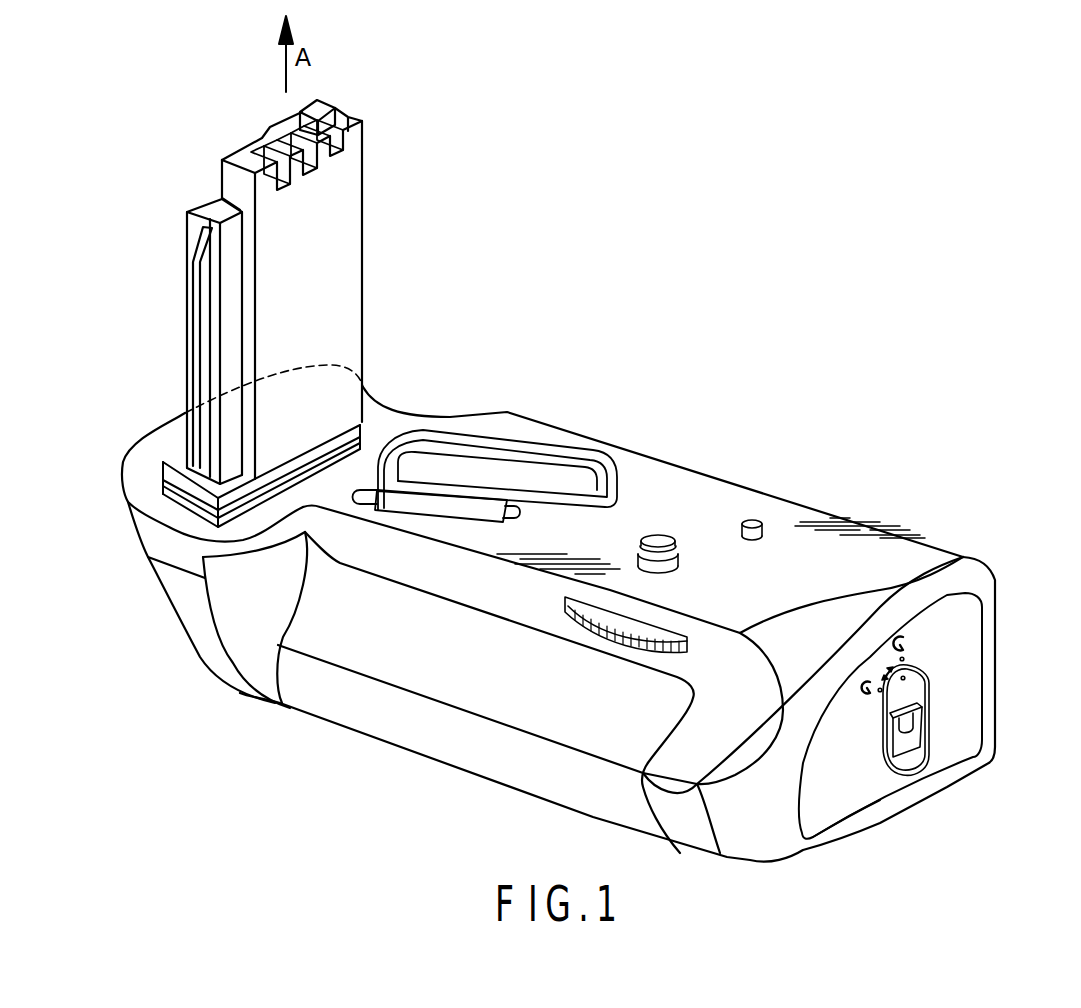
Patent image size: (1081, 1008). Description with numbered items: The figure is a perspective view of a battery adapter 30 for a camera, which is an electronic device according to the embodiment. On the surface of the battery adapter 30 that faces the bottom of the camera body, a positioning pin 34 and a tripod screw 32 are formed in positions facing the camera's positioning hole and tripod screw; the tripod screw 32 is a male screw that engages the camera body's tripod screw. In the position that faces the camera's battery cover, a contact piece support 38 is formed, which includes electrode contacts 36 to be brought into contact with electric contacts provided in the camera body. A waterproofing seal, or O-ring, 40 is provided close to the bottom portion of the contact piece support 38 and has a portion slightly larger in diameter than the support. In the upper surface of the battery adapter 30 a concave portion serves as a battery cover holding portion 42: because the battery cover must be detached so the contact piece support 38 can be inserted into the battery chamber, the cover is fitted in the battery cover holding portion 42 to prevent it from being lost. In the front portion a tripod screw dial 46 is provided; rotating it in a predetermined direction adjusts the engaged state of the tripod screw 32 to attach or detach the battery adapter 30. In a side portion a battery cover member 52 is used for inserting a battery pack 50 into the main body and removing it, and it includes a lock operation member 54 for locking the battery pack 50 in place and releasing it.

The battery adapter 30 is at (373, 750).
The tripod screw 32 is at (661, 533).
The positioning pin 34 is at (753, 519).
The electrode contacts 36 is at (313, 182).
The contact piece support 38 is at (337, 278).
The waterproofing seal (O-ring) 40 is at (372, 422).
The battery cover holding portion 42 is at (556, 486).
The tripod screw dial 46 is at (612, 640).
The battery pack 50 is at (956, 728).
The battery cover member 52 is at (828, 806).
The lock operation member 54 is at (901, 748).